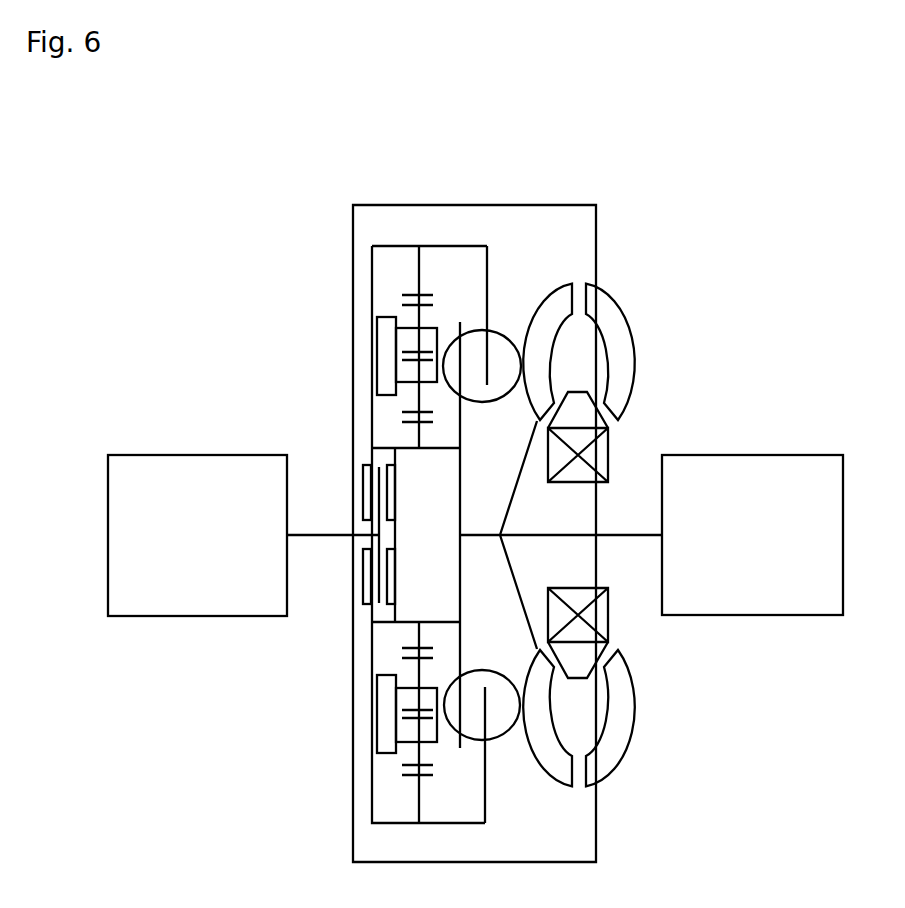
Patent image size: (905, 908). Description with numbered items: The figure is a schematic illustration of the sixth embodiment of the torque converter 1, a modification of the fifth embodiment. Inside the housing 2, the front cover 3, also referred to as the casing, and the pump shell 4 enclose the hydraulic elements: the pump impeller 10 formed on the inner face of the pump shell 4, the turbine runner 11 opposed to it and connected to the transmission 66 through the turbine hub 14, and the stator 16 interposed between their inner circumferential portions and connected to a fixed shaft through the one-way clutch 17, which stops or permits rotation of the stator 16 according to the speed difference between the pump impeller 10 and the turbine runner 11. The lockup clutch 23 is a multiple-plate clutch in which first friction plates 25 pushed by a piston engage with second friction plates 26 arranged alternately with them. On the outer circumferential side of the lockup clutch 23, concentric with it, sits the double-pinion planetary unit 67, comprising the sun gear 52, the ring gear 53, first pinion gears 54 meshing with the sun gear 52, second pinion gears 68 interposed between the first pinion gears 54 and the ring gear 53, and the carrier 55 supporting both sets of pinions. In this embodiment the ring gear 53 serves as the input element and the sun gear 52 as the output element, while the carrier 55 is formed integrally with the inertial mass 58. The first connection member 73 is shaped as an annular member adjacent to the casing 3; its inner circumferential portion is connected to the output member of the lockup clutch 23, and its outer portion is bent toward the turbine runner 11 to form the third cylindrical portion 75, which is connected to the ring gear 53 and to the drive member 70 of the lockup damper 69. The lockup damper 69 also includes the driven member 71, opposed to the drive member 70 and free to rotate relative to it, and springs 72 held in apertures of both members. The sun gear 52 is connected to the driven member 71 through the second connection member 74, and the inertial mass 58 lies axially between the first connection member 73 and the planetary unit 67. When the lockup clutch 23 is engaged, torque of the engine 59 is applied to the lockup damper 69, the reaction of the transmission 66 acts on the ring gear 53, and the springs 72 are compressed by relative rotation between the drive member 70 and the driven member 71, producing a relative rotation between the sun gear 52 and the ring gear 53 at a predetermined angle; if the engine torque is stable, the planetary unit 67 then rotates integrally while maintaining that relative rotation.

The torque converter 1 is at (522, 163).
The housing 2 is at (418, 202).
The front cover 3 is at (353, 230).
The pump shell 4 is at (596, 220).
The pump impeller 10 is at (627, 340).
The turbine runner 11 is at (540, 328).
The turbine hub 14 is at (512, 500).
The stator 16 is at (606, 428).
The one-way clutch 17 is at (610, 466).
The lockup clutch 23 is at (353, 462).
The first friction plates 25 is at (379, 527).
The second friction plates 26 is at (386, 490).
The sun gear 52 is at (414, 440).
The ring gear 53 is at (405, 296).
The first pinion gears 54 is at (402, 421).
The carrier 55 is at (402, 411).
The inertial mass 58 is at (377, 332).
The engine 59 is at (195, 618).
The transmission 66 is at (753, 618).
The double-pinion planetary unit 67 is at (375, 370).
The second pinion gears 68 is at (403, 354).
The lockup damper 69 is at (503, 322).
The drive member 70 is at (486, 296).
The driven member 71 is at (460, 430).
The springs 72 is at (508, 335).
The first connection member 73 is at (372, 268).
The second connection member 74 is at (432, 450).
The third cylindrical portion 75 is at (460, 246).